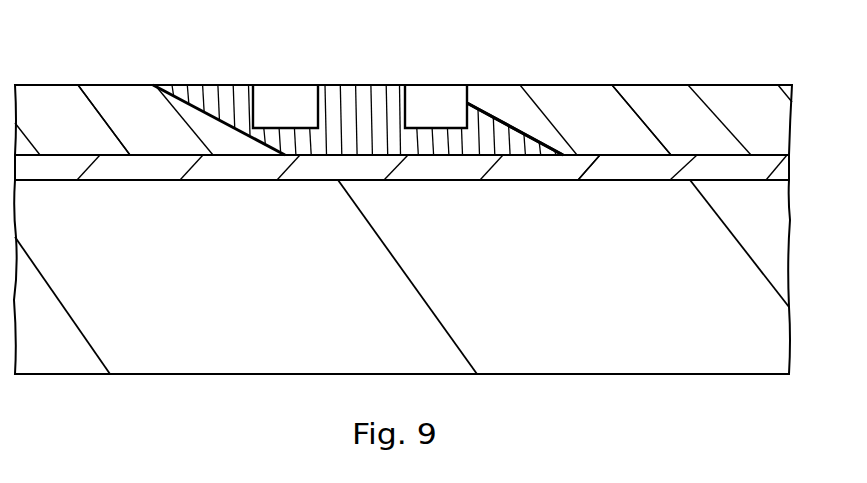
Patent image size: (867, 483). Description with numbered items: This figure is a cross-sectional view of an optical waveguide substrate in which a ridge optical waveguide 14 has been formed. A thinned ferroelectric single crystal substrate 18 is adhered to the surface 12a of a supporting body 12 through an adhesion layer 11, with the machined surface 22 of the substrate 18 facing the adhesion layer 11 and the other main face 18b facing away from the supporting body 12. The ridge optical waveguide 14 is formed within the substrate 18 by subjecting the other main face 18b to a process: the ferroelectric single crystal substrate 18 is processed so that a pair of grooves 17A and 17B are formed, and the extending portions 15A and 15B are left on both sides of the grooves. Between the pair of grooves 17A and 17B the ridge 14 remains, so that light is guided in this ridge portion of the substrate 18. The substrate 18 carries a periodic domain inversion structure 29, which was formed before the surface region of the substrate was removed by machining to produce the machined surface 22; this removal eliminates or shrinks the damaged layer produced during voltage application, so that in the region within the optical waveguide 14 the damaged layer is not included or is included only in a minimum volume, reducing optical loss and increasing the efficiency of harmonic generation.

The adhesion layer 11 is at (772, 170).
The supporting body 12 is at (775, 245).
The surface of the supporting body 12a is at (638, 177).
The ridge optical waveguide 14 is at (352, 100).
The extending portion 15A is at (110, 97).
The extending portion 15B is at (578, 98).
The groove 17A is at (290, 125).
The groove 17B is at (430, 127).
The substrate 18 is at (777, 113).
The other main face 18b is at (675, 98).
The machined surface 22 is at (597, 160).
The periodic domain inversion structure 29 is at (480, 125).